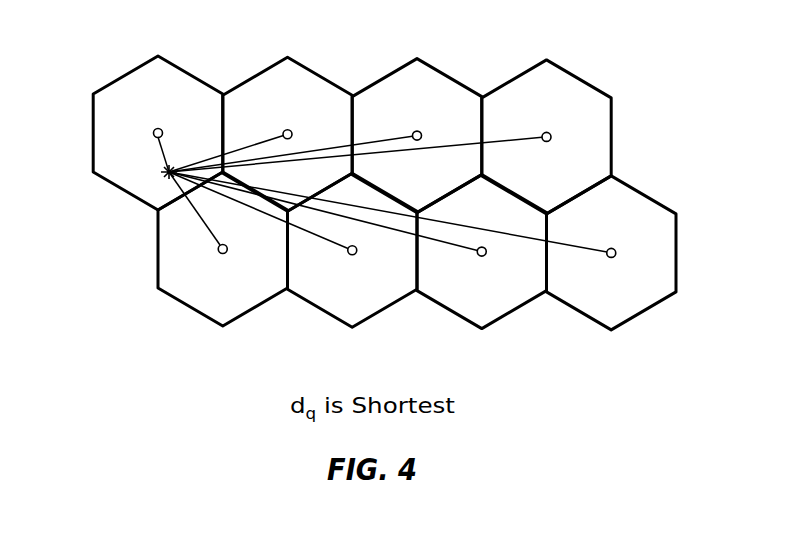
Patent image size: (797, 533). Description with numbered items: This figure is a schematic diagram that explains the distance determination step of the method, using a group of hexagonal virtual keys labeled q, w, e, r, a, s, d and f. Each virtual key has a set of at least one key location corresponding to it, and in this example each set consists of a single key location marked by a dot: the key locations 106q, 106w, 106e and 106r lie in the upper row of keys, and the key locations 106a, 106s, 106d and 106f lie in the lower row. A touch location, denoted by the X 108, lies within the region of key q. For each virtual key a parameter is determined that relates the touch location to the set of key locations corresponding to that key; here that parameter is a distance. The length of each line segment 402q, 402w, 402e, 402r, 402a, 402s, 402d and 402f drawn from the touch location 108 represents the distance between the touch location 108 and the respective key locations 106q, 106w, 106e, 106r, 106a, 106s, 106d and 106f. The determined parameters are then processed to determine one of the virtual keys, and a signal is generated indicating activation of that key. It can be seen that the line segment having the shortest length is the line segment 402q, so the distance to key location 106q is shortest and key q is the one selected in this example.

The key location 106q is at (158, 128).
The key location 106w is at (289, 129).
The key location 106e is at (418, 131).
The key location 106r is at (547, 132).
The key location 106a is at (223, 254).
The key location 106s is at (352, 255).
The key location 106d is at (482, 256).
The key location 106f is at (612, 257).
The line segment 402q is at (160, 148).
The line segment 402w is at (257, 143).
The line segment 402e is at (388, 137).
The line segment 402r is at (519, 138).
The line segment 402a is at (198, 212).
The line segment 402s is at (336, 245).
The line segment 402d is at (463, 246).
The line segment 402f is at (590, 249).
The touch location 108 is at (166, 176).